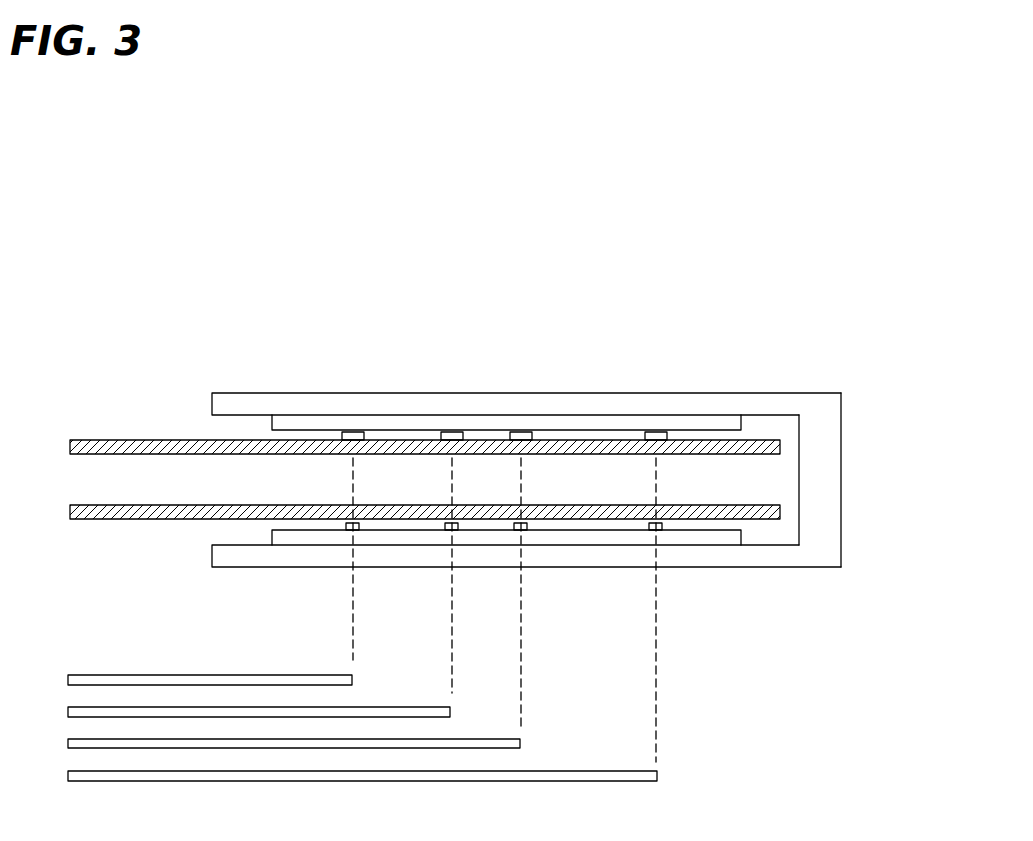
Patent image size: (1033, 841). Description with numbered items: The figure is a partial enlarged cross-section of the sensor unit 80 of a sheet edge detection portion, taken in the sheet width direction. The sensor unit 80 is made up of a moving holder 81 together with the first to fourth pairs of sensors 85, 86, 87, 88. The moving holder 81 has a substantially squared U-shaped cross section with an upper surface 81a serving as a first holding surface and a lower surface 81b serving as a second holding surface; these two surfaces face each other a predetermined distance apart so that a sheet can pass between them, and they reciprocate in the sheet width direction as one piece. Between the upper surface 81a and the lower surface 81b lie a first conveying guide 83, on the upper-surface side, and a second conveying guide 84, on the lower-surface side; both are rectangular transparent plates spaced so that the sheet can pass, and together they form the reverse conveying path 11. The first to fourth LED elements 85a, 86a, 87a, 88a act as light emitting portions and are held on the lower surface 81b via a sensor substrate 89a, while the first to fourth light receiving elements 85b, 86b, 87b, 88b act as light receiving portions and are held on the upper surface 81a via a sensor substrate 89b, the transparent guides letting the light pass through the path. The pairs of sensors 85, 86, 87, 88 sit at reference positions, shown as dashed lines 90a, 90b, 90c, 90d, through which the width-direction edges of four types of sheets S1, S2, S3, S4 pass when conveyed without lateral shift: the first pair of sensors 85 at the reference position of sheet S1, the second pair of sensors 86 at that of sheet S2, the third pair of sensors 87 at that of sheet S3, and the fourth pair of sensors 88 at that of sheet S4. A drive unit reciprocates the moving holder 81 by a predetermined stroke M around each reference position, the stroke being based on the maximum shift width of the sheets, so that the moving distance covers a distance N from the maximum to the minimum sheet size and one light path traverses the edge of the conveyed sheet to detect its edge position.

The sensor unit 80 is at (621, 294).
The moving holder 81 is at (824, 439).
The upper surface 81a is at (246, 397).
The lower surface 81b is at (232, 560).
The first conveying guide 83 is at (115, 440).
The second conveying guide 84 is at (120, 520).
The first pair of sensors 85 is at (364, 410).
The first LED element 85a is at (348, 531).
The first light receiving element 85b is at (352, 432).
The second pair of sensors 86 is at (458, 410).
The second LED element 86a is at (457, 531).
The second light receiving element 86b is at (447, 432).
The third pair of sensors 87 is at (528, 412).
The third LED element 87a is at (528, 531).
The third light receiving element 87b is at (512, 432).
The fourth pair of sensors 88 is at (653, 412).
The fourth LED element 88a is at (662, 532).
The fourth light receiving element 88b is at (666, 432).
The sensor substrate 89a is at (277, 541).
The sensor substrate 89b is at (274, 421).
The dashed line 90a is at (356, 656).
The dashed line 90b is at (455, 689).
The dashed line 90c is at (524, 725).
The dashed line 90d is at (660, 728).
The reverse conveying path 11 is at (768, 484).
The sheet S1 is at (80, 678).
The sheet S2 is at (118, 706).
The sheet S3 is at (172, 740).
The sheet S4 is at (233, 773).
The predetermined stroke M is at (305, 605).
The distance N is at (689, 815).